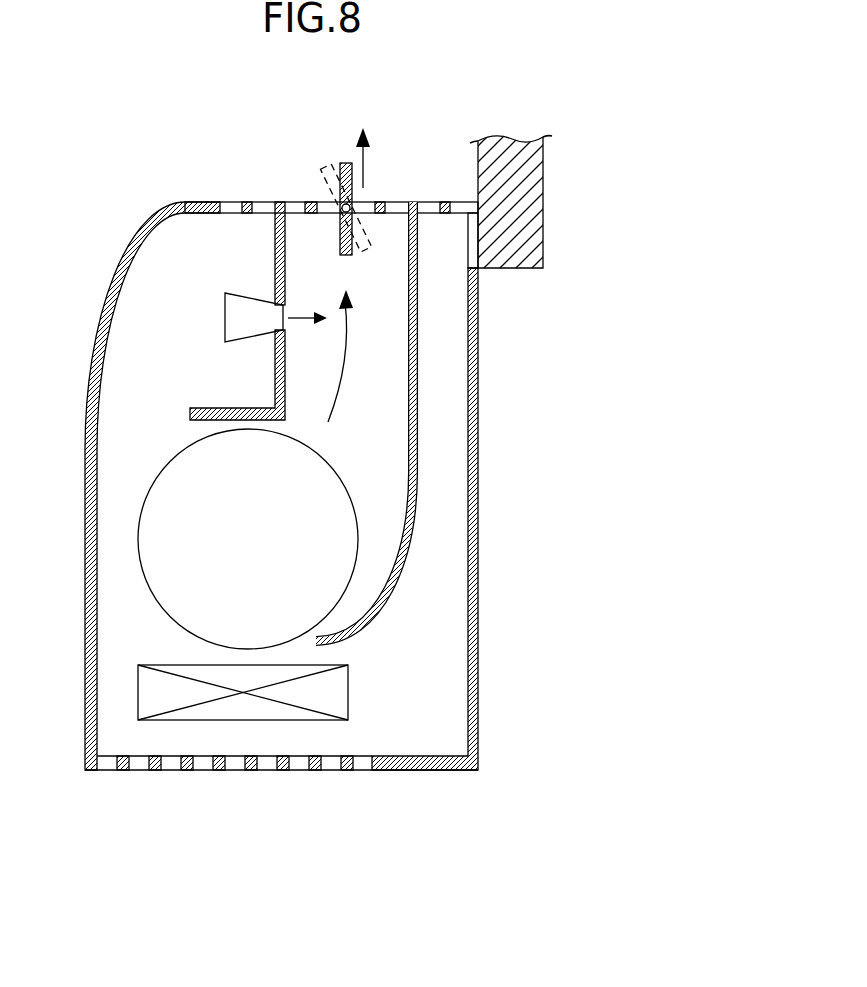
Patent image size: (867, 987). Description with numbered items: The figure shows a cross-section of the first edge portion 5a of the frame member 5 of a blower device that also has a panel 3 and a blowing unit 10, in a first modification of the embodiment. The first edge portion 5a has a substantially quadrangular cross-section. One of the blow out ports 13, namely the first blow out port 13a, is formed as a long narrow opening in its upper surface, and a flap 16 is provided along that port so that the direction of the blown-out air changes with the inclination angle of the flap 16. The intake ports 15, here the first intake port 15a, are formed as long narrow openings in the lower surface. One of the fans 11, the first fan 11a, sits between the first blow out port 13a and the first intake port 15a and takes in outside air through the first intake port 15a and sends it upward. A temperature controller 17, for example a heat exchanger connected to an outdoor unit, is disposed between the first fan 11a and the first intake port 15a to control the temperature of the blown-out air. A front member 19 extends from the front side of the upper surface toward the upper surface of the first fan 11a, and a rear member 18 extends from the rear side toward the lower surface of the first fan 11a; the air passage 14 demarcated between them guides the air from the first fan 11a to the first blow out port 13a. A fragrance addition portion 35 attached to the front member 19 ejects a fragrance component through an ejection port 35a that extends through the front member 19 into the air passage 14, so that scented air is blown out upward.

The panel 3 is at (530, 205).
The frame member 5 is at (125, 486).
The first edge portion 5a is at (108, 287).
The blowing unit 10 is at (128, 471).
The fans 11 is at (181, 539).
The first fan 11a is at (145, 534).
The air blow out ports 13 is at (331, 152).
The first blow out port 13a is at (297, 207).
The air passage 14 is at (378, 450).
The intake port 15 is at (235, 815).
The first intake port 15a is at (300, 762).
The flap 16 is at (346, 160).
The temperature controller 17 is at (330, 692).
The rear member 18 is at (418, 403).
The front member 19 is at (214, 408).
The fragrance addition portion 35 is at (225, 316).
The ejection port 35a is at (279, 304).